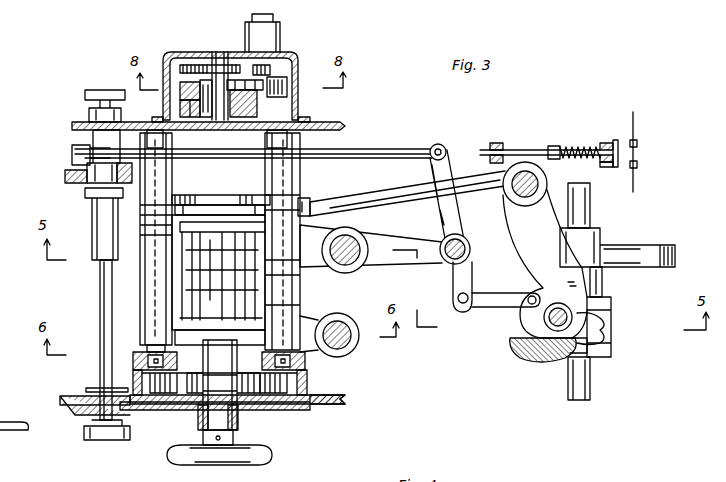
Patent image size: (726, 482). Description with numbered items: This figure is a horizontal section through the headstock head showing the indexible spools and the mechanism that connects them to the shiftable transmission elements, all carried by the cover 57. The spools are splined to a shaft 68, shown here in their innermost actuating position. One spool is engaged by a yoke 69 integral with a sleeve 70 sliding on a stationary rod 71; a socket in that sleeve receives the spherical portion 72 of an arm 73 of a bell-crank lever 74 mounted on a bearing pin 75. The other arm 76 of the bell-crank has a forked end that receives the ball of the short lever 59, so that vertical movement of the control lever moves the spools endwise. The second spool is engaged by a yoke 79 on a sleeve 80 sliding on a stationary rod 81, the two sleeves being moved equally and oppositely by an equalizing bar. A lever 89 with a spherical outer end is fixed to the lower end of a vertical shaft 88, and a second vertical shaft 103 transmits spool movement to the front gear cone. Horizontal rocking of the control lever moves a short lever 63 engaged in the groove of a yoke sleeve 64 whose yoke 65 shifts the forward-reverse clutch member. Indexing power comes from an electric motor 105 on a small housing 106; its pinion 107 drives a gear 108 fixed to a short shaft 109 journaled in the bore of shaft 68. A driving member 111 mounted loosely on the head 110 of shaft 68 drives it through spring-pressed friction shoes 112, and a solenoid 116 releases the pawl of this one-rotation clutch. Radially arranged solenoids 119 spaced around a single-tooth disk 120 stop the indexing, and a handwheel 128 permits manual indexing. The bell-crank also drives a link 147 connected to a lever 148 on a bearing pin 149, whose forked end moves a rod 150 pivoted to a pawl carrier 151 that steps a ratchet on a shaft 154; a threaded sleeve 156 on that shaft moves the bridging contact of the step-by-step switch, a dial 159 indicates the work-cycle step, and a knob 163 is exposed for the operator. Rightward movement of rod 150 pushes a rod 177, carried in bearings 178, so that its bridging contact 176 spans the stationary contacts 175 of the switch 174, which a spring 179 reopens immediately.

The cover 57 is at (340, 124).
The short lever 59 is at (542, 348).
The short lever 63 is at (602, 327).
The yoke sleeve 64 is at (602, 288).
The yoke 65 is at (638, 246).
The shaft 68 is at (238, 196).
The yoke 69 is at (236, 208).
The sleeve 70 is at (298, 288).
The stationary rod 71 is at (289, 142).
The spherical portion 72 is at (308, 198).
The arm 73 is at (358, 197).
The bell-crank lever 74 is at (404, 195).
The bearing pin 75 is at (525, 175).
The arm 76 is at (516, 245).
The yoke 79 is at (206, 305).
The sleeve 80 is at (140, 268).
The stationary rod 81 is at (152, 330).
The vertical shaft 88 is at (350, 240).
The lever 89 is at (384, 266).
The vertical shaft 103 is at (352, 341).
The electric motor 105 is at (282, 30).
The housing 106 is at (172, 52).
The pinion 107 is at (271, 68).
The gear 108 is at (190, 66).
The short shaft 109 is at (224, 52).
The head 110 is at (245, 106).
The shaft driving member 111 is at (181, 92).
The friction shoes 112 is at (180, 108).
The solenoid 116 is at (285, 90).
The solenoids 119 is at (305, 378).
The disk 120 is at (192, 393).
The handwheel 128 is at (274, 454).
The link 147 is at (498, 304).
The lever 148 is at (450, 226).
The bearing pin 149 is at (464, 242).
The rod 150 is at (370, 148).
The pawl carrier 151 is at (72, 157).
The shaft 154 is at (100, 361).
The sleeve 156 is at (100, 240).
The dial 159 is at (102, 437).
The knob 163 is at (93, 88).
The switch 174 is at (656, 152).
The stationary contacts 175 is at (638, 142).
The bridging contact 176 is at (616, 160).
The rod 177 is at (542, 148).
The bearings 178 is at (606, 142).
The spring 179 is at (574, 146).